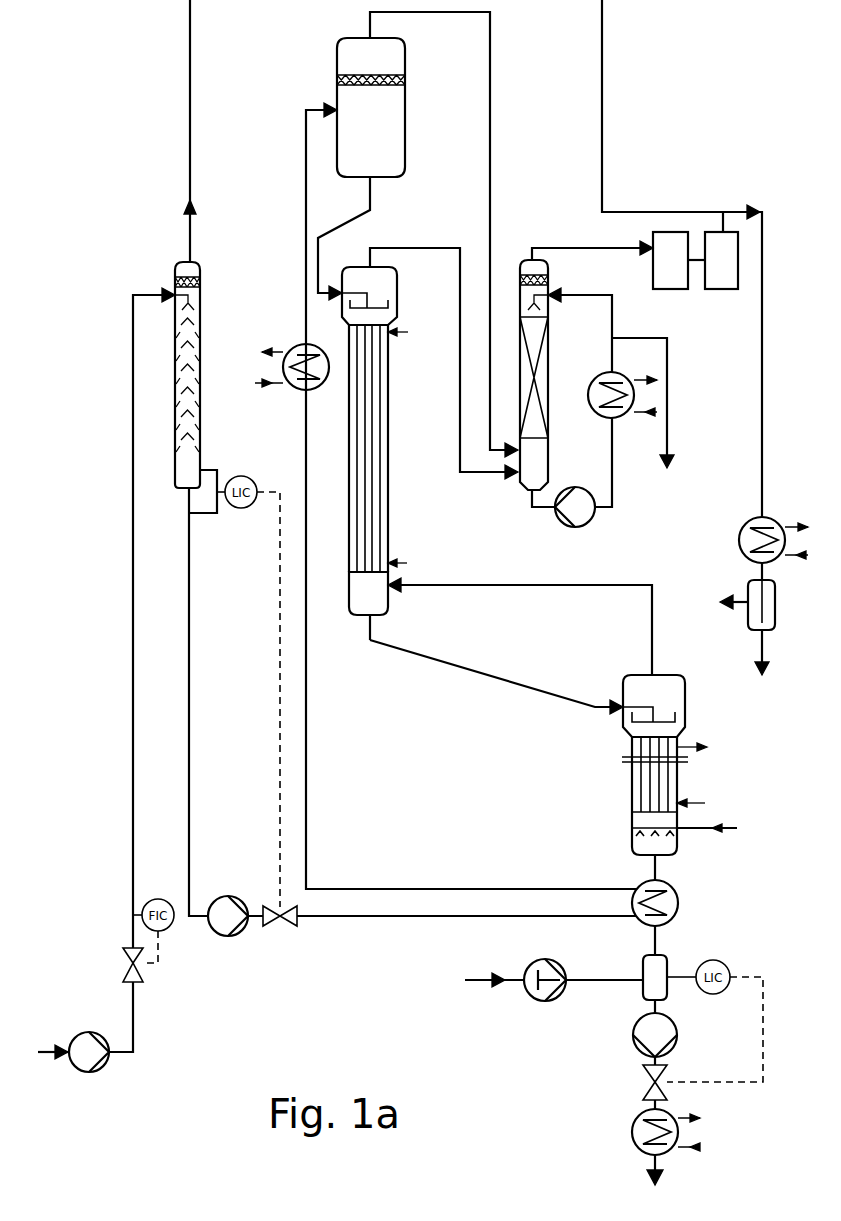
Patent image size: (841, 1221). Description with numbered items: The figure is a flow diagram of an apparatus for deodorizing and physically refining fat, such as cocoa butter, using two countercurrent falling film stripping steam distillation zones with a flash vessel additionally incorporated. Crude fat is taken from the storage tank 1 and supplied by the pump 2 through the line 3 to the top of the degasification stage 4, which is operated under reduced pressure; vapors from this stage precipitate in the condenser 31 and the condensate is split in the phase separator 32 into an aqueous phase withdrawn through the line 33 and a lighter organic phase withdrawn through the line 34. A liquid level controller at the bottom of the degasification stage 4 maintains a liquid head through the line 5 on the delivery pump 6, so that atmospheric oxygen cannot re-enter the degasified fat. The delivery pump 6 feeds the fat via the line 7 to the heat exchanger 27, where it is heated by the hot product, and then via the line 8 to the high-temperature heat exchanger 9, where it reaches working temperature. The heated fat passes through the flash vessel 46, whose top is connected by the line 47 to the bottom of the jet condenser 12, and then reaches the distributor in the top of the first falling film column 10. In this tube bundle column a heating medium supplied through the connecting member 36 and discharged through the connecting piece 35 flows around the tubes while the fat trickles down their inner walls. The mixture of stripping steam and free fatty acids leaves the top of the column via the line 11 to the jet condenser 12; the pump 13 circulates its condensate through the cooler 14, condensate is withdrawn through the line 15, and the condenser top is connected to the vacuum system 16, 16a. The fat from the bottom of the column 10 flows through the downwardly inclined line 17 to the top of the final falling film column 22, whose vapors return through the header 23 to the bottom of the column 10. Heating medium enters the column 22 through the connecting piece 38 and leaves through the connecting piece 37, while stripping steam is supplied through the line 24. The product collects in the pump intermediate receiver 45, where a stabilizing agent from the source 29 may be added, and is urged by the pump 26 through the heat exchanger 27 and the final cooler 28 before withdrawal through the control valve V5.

The storage tank 1 is at (63, 1040).
The pump 2 is at (89, 1032).
The line 3 is at (133, 728).
The degasification stage 4 is at (200, 300).
The line 5 is at (189, 728).
The delivery pump 6 is at (228, 936).
The line 7 is at (430, 918).
The line 8 is at (497, 857).
The high-temperature heat exchanger 9 is at (300, 344).
The first falling film column 10 is at (388, 455).
The line 11 is at (460, 377).
The jet condenser 12 is at (548, 368).
The pump 13 is at (582, 487).
The cooler 14 is at (612, 372).
The line 15 is at (670, 468).
The vacuum system 16 is at (662, 289).
The vacuum system 16a is at (718, 289).
The line 17 is at (476, 672).
The final falling film column 22 is at (677, 780).
The header 23 is at (509, 585).
The line 24 is at (730, 832).
The pump 26 is at (672, 1050).
The heat exchanger 27 is at (678, 906).
The heat exchanger 28 is at (634, 1140).
The source 29 is at (560, 1001).
The condenser 31 is at (738, 536).
The phase separator 32 is at (776, 607).
The line 33 is at (758, 678).
The line 34 is at (723, 606).
The connecting piece 35 is at (406, 330).
The connecting member 36 is at (406, 564).
The connecting piece 37 is at (694, 745).
The connecting piece 38 is at (705, 803).
The pump intermediate receiver 45 is at (643, 972).
The flash vessel 46 is at (405, 132).
The line 47 is at (490, 95).
The control valve V5 is at (646, 1082).